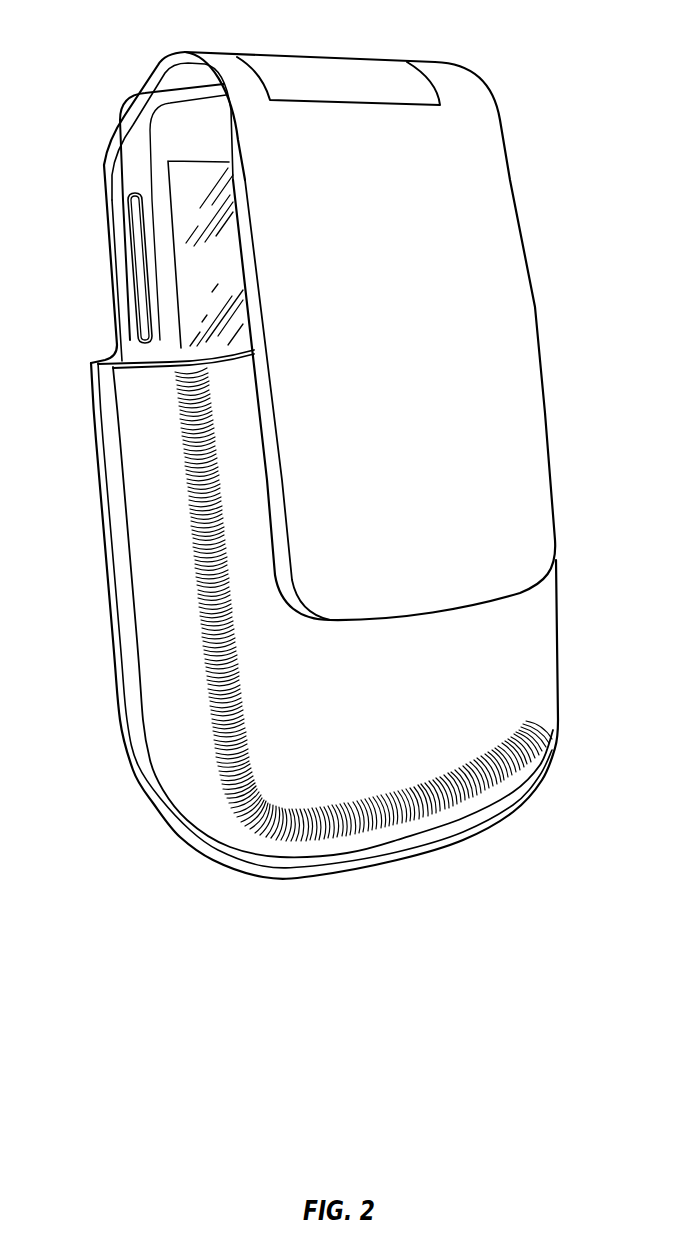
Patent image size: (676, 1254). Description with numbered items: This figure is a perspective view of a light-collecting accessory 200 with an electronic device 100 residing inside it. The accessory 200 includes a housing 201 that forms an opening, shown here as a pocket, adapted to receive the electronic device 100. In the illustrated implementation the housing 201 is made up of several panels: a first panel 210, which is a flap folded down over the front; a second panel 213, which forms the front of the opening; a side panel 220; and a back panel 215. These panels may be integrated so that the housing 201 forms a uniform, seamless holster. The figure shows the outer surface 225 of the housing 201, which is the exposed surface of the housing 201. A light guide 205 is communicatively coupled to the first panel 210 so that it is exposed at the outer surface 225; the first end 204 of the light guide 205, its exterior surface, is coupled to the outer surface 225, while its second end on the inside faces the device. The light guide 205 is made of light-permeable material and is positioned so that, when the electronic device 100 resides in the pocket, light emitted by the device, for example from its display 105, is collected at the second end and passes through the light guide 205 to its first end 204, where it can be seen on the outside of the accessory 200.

The electronic device 100 is at (138, 162).
The display 105 is at (198, 280).
The light-collecting accessory 200 is at (153, 624).
The housing 201 is at (113, 355).
The first end 204 is at (302, 73).
The light guide 205 is at (341, 84).
The first panel 210 is at (535, 307).
The second panel 213 is at (535, 650).
The back panel 215 is at (135, 723).
The side panel 220 is at (138, 510).
The outer surface 225 is at (530, 437).